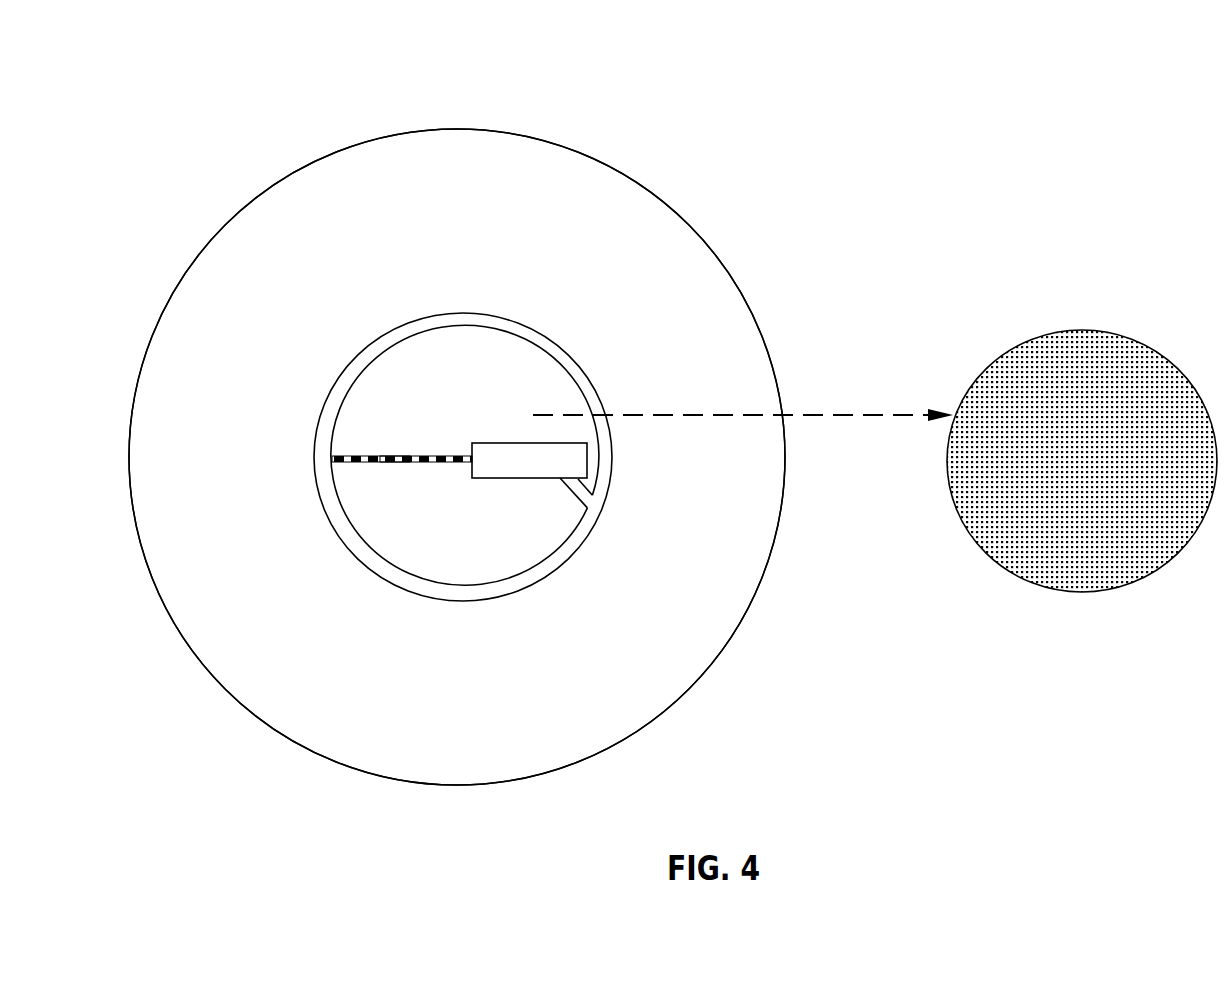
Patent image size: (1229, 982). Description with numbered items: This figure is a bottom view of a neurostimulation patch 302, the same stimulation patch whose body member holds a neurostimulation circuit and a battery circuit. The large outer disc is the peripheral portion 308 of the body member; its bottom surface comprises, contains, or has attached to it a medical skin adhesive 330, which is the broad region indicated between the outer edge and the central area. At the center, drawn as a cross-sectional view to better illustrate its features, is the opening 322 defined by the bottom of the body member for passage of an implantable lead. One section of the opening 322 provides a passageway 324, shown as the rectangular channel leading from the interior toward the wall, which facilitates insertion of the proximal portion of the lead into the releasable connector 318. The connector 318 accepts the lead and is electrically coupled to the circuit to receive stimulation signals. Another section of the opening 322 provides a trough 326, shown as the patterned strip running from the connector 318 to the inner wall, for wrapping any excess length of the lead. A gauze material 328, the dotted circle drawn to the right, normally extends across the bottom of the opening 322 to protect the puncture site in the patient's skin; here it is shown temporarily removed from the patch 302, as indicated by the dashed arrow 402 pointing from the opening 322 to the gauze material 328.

The neurostimulation patch 302 is at (676, 137).
The peripheral portion 308 is at (457, 457).
The releasable connector 318 is at (428, 440).
The opening 322 is at (447, 557).
The passageway 324 is at (585, 460).
The trough 326 is at (342, 439).
The gauze material 328 is at (1082, 442).
The medical skin adhesive 330 is at (726, 244).
The dashed arrow 402 is at (743, 482).